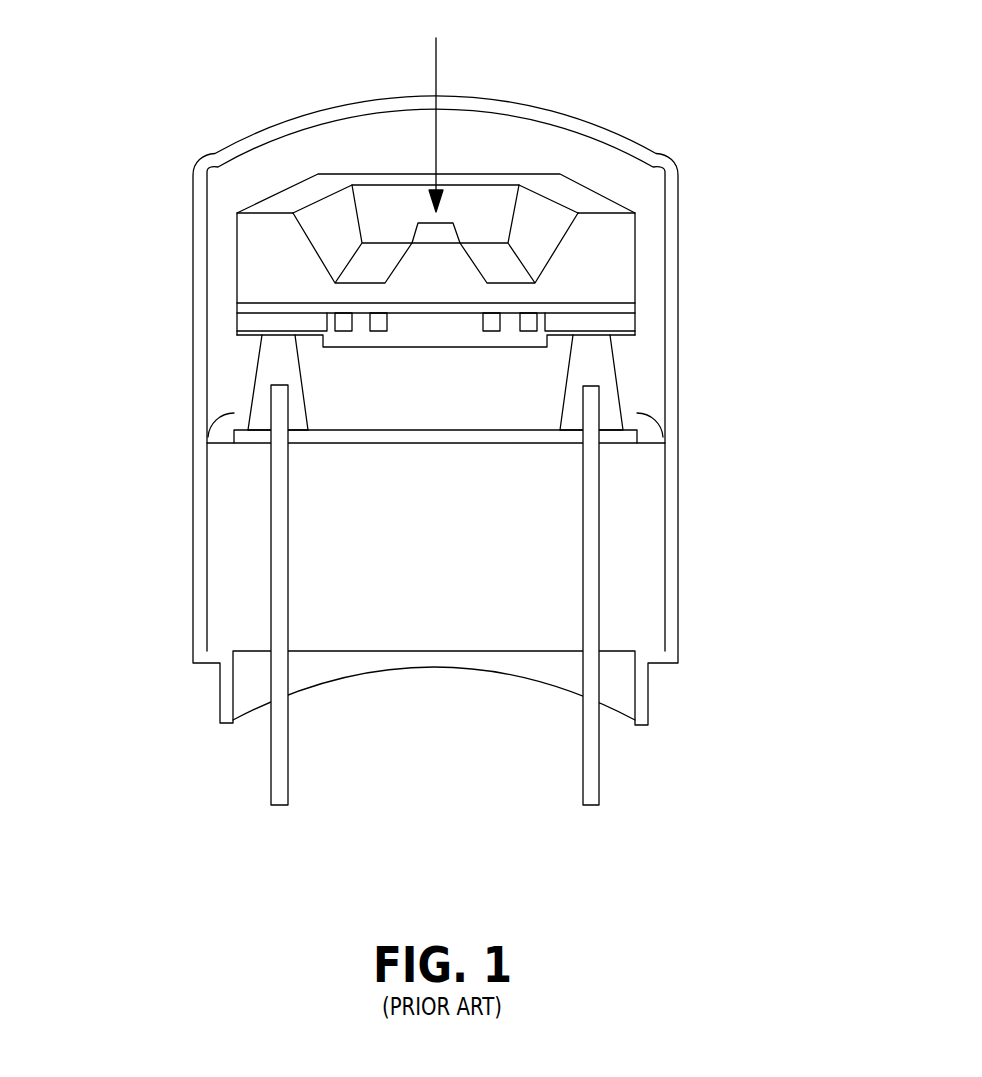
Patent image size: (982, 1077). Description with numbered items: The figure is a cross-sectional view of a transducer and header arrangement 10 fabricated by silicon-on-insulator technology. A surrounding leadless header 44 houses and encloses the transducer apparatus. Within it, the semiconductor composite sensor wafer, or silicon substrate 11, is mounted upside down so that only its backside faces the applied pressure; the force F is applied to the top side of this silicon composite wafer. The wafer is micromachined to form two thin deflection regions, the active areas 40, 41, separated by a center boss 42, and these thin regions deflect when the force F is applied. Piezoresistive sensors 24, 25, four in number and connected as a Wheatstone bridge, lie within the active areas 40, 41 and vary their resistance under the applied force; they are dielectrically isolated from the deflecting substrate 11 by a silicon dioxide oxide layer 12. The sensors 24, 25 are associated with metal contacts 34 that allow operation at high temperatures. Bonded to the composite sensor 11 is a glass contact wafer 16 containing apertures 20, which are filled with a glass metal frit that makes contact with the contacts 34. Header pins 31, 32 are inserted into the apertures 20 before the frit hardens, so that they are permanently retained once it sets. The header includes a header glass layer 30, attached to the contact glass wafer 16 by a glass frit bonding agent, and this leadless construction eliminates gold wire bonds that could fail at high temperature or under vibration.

The semiconductor device package 10 is at (780, 142).
The silicon substrate 11 is at (337, 182).
The oxide layer 12 is at (628, 308).
The glass contact wafer 16 is at (245, 358).
The apertures 20 is at (247, 393).
The piezoresistive sensor 24 is at (365, 337).
The piezoresistive sensor 25 is at (500, 337).
The header glass layer 30 is at (628, 540).
The header pin 31 is at (270, 763).
The header pin 32 is at (583, 750).
The contacts 34 is at (600, 357).
The active area 40 is at (354, 265).
The active area 41 is at (508, 268).
The center boss 42 is at (436, 232).
The header 44 is at (193, 168).
The force F is at (436, 112).